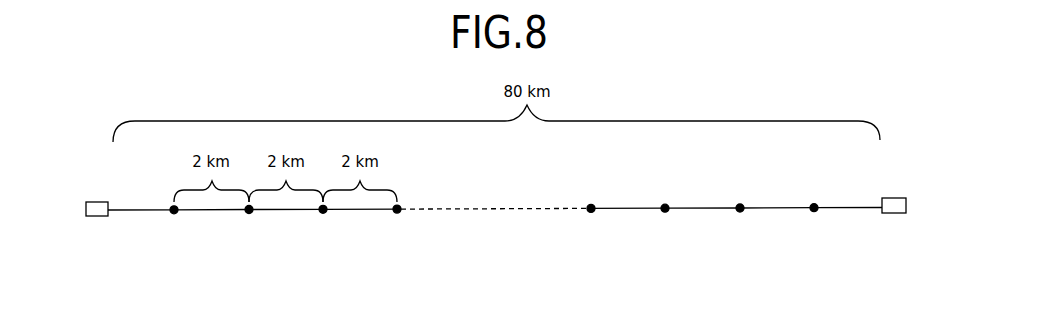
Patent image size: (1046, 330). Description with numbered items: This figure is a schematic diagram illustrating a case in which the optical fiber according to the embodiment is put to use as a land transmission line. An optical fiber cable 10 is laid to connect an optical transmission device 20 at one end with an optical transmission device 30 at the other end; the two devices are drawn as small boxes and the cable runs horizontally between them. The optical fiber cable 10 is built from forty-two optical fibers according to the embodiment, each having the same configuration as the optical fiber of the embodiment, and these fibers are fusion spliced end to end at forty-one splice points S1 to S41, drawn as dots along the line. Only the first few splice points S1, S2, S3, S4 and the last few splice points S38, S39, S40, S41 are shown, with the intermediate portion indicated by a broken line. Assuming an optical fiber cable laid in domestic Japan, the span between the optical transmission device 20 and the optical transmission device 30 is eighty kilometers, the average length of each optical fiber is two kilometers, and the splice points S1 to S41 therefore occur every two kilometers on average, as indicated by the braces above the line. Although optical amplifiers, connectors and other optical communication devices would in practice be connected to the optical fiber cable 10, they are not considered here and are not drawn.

The optical fiber cable 10 is at (644, 182).
The optical transmission device 20 is at (97, 217).
The optical transmission device 30 is at (893, 214).
The splice point S1 is at (174, 222).
The splice point S2 is at (249, 222).
The splice point S3 is at (323, 222).
The splice point S4 is at (397, 222).
The splice point S38 is at (591, 222).
The splice point S39 is at (665, 222).
The splice point S40 is at (740, 222).
The splice point S41 is at (814, 222).